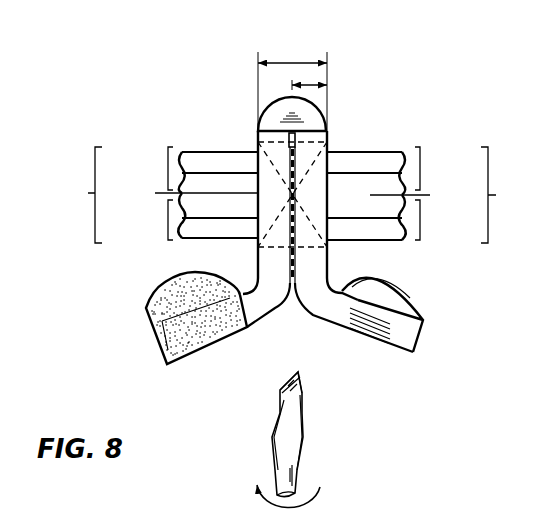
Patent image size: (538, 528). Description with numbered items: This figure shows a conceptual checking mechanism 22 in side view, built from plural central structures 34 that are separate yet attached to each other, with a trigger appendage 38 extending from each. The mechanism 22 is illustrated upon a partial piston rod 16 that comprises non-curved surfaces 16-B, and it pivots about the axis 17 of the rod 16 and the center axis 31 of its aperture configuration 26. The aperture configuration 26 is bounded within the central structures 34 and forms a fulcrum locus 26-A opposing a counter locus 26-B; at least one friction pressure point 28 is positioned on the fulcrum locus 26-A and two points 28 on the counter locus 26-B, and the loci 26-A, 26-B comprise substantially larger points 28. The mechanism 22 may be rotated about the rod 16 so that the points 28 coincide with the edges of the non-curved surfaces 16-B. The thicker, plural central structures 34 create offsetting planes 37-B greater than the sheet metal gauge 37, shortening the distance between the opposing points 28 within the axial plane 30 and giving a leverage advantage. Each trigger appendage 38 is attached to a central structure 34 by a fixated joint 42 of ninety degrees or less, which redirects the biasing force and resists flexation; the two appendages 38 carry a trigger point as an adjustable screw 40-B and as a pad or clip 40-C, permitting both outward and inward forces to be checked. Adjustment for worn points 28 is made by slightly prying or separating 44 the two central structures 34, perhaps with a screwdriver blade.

The checking mechanism 22 is at (120, 77).
The piston rod 16 is at (190, 142).
The non-curved surfaces 16-B is at (198, 233).
The axis of rod 17 is at (237, 193).
The aperture configuration 26 is at (292, 195).
The fulcrum locus 26-A is at (292, 216).
The counter locus 26-B is at (292, 171).
The friction pressure points 28 is at (254, 137).
The axial plane 30 is at (277, 218).
The center axis 31 is at (300, 192).
The central structure 34 is at (258, 130).
The sheet metal gauge 37 is at (295, 85).
The offsetting planes 37-B is at (293, 63).
The trigger appendages 38 is at (315, 305).
The adjustable screw 40-B is at (163, 303).
The pad or clip 40-C is at (395, 295).
The fixated joint 42 is at (248, 287).
The prying or separating 44 is at (295, 440).